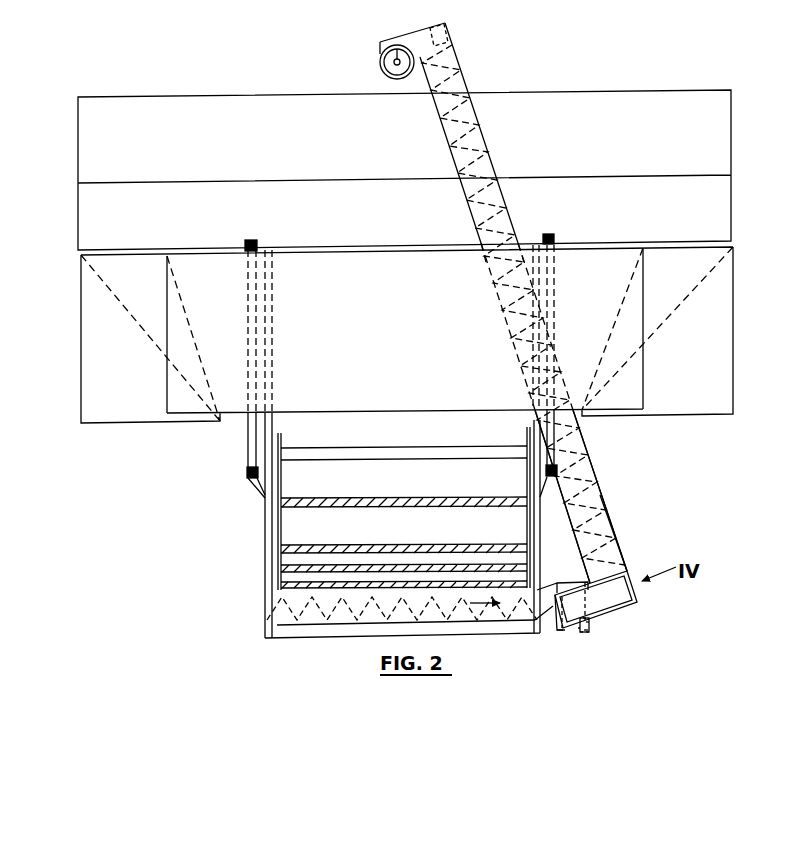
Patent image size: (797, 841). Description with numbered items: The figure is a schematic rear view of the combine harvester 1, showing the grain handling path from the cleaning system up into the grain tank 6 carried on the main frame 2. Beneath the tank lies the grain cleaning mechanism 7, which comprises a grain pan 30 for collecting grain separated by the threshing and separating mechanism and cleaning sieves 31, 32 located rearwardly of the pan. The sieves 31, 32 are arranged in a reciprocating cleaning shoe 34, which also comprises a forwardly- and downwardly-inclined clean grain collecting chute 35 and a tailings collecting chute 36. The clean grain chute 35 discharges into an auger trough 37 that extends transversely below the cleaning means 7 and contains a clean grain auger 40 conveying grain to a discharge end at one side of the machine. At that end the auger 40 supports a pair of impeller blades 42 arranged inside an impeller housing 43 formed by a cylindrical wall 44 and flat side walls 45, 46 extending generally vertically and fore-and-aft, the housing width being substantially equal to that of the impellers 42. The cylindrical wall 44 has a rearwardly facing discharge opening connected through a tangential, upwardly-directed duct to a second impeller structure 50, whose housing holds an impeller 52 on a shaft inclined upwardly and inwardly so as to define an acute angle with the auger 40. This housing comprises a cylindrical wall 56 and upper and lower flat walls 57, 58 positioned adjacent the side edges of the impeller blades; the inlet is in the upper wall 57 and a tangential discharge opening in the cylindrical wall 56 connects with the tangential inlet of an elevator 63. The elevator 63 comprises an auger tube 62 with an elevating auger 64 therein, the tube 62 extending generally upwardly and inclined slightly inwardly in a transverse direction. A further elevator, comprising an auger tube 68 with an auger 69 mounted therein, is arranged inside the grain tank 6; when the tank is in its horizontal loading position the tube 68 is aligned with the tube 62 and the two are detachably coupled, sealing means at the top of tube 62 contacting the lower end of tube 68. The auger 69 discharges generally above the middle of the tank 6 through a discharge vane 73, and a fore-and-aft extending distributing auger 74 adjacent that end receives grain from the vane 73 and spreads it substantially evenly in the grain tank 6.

The combine harvester 1 is at (748, 333).
The main frame 2 is at (265, 536).
The grain tank 6 is at (732, 154).
The grain cleaning mechanism 7 is at (250, 576).
The grain pan 30 is at (398, 446).
The cleaning sieve 31 is at (398, 498).
The cleaning sieve 32 is at (400, 545).
The cleaning shoe 34 is at (260, 557).
The clean grain collecting chute 35 is at (292, 580).
The tailings collecting chute 36 is at (293, 587).
The auger trough 37 is at (517, 620).
The clean grain auger 40 is at (348, 614).
The impeller blades 42 is at (562, 580).
The impeller housing 43 is at (600, 634).
The cylindrical wall 44 is at (581, 638).
The flat side wall 45 is at (578, 632).
The flat side wall 46 is at (592, 626).
The second impeller structure 50 is at (612, 610).
The impeller 52 is at (590, 624).
The cylindrical wall 56 is at (562, 631).
The upper flat wall 57 is at (575, 581).
The lower flat wall 58 is at (586, 632).
The auger tube 62 is at (606, 552).
The elevator 63 is at (598, 462).
The elevating auger 64 is at (600, 493).
The auger tube 68 is at (467, 86).
The auger 69 is at (507, 241).
The discharge vane 73 is at (447, 30).
The distributing auger 74 is at (380, 73).